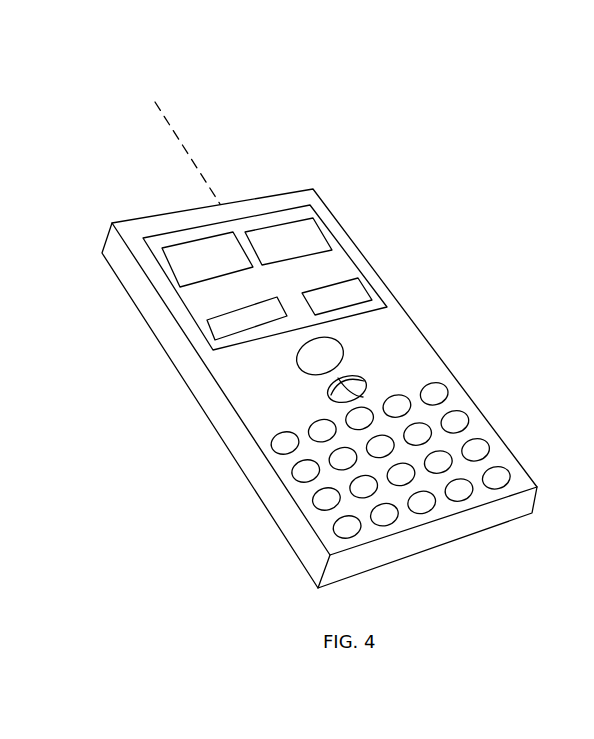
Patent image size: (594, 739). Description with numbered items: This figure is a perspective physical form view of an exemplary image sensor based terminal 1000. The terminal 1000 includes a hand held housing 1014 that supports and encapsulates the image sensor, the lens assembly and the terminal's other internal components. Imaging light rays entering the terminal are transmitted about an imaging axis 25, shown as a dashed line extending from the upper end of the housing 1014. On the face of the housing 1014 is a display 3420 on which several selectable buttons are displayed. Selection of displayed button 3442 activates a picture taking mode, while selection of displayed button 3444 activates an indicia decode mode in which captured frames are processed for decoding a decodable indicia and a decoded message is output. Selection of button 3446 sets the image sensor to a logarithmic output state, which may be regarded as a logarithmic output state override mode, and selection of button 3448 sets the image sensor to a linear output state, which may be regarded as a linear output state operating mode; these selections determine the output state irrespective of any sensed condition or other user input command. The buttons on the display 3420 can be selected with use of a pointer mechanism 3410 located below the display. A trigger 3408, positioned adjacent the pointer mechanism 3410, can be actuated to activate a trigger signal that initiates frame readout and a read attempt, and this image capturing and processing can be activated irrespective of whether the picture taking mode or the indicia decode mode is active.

The terminal 1000 is at (312, 107).
The imaging axis 25 is at (186, 146).
The hand held housing 1014 is at (462, 404).
The display 3420 is at (353, 258).
The displayed button 3442 is at (170, 268).
The displayed button 3444 is at (208, 325).
The button 3446 is at (320, 224).
The button 3448 is at (366, 281).
The trigger 3408 is at (323, 340).
The pointer mechanism 3410 is at (362, 378).